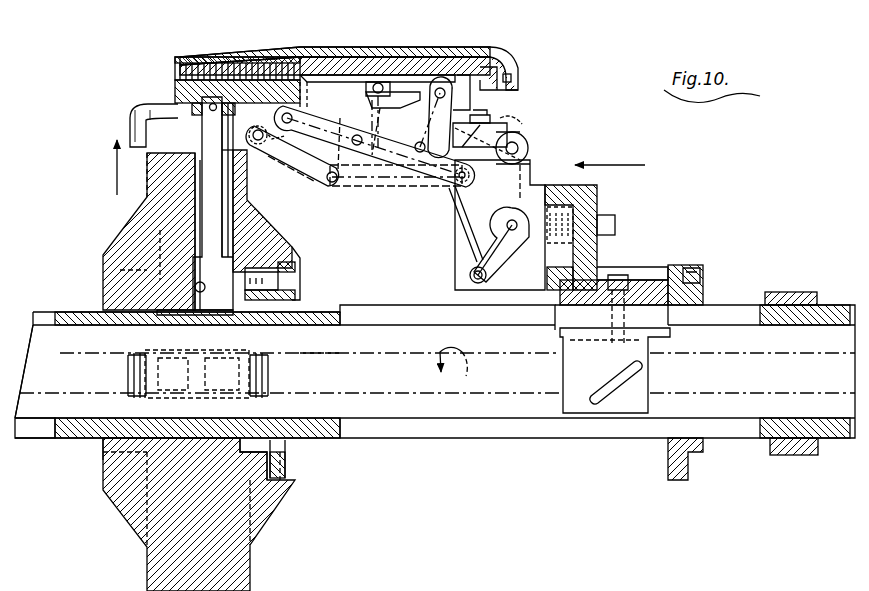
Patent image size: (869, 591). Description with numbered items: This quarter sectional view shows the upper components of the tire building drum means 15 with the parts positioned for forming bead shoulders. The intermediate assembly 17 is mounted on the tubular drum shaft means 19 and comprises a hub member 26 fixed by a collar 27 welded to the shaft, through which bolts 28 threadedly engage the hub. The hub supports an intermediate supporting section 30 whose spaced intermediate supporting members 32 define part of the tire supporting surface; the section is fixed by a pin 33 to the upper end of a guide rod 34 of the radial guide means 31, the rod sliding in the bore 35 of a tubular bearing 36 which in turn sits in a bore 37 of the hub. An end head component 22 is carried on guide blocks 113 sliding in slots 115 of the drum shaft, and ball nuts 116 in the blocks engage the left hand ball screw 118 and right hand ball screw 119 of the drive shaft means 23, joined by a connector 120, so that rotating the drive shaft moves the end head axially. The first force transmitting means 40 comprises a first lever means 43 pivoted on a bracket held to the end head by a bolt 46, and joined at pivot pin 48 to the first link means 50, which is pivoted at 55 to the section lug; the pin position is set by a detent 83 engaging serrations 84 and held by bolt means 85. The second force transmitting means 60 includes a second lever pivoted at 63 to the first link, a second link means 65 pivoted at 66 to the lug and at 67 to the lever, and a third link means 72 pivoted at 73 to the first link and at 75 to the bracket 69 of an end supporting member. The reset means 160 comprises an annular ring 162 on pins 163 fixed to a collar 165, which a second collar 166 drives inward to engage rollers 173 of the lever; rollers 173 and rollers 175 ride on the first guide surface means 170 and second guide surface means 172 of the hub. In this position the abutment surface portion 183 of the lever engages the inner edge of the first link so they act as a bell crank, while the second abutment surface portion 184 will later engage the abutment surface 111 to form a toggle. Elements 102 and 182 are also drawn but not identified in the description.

The drum means 15 is at (256, 52).
The intermediate assembly 17 is at (140, 552).
The tubular drum shaft means 19 is at (66, 440).
The end head component 22 is at (598, 196).
The drive shaft means 23 is at (413, 396).
The hub member 26 is at (92, 484).
The collar 27 is at (290, 472).
The bolts 28 is at (284, 268).
The intermediate supporting section 30 is at (176, 90).
The radial guide means 31 is at (195, 195).
The intermediate supporting members 32 is at (210, 56).
The pin 33 is at (200, 110).
The guide rod 34 is at (200, 215).
The bore 35 is at (218, 150).
The tubular bearing 36 is at (165, 255).
The bore 37 is at (196, 286).
The first force transmitting means 40 is at (370, 186).
The first lever means 43 is at (478, 232).
The bolt 46 is at (614, 222).
The pivot pin 48 is at (525, 140).
The first link means 50 is at (396, 162).
The pivot 55 is at (300, 104).
The second force transmitting means 60 is at (304, 178).
The pivot 63 is at (357, 134).
The second link means 65 is at (292, 160).
The pivot 66 is at (278, 150).
The pivot 67 is at (336, 190).
The bracket 69 is at (380, 80).
The third link means 72 is at (425, 114).
The pivot 73 is at (362, 164).
The pivot 75 is at (440, 85).
The detent 83 is at (452, 173).
The teeth or serrations 84 is at (476, 135).
The bolt means 85 is at (500, 125).
The plate 102 is at (290, 52).
The abutment surface 111 is at (530, 190).
The guide block 113 is at (660, 333).
The slot 115 is at (44, 318).
The ball nut 116 is at (648, 404).
The left hand ball screw 118 is at (62, 366).
The right hand ball screw 119 is at (320, 364).
The connector 120 is at (242, 358).
The reset means 160 is at (546, 280).
The annular ring 162 is at (547, 268).
The pins 163 is at (660, 268).
The collar 165 is at (678, 481).
The second collar 166 is at (798, 458).
The first guide surface means 170 is at (294, 252).
The second guide surface means 172 is at (275, 243).
The rollers 173 is at (468, 276).
The rollers 175 is at (450, 192).
The pin 182 is at (520, 78).
The abutment surface portion 183 is at (522, 120).
The second abutment surface portion 184 is at (550, 180).